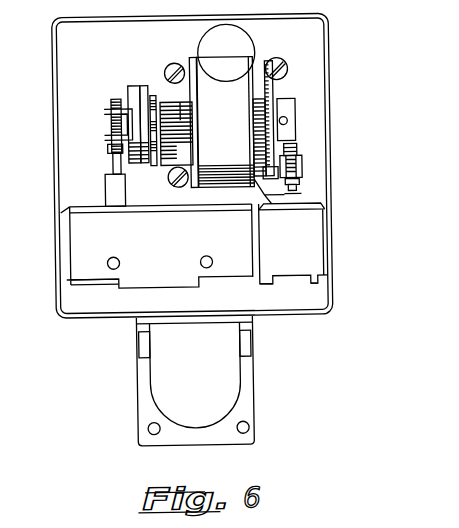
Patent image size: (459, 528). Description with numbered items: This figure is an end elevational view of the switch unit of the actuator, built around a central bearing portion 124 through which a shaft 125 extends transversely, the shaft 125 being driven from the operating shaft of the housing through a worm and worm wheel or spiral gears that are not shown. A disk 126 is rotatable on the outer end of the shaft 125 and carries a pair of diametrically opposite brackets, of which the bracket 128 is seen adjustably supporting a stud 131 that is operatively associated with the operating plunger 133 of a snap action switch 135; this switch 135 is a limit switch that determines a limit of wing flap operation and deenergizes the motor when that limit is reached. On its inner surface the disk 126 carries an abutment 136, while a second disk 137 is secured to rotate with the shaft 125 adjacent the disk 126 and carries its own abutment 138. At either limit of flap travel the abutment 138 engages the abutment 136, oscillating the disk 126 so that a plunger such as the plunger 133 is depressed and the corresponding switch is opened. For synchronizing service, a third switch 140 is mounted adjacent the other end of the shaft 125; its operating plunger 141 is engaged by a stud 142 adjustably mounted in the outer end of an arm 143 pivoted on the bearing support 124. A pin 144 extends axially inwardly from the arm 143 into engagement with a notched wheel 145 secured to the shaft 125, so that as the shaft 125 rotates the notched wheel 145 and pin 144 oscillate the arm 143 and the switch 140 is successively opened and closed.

The central bearing portion 124 is at (212, 186).
The shaft 125 is at (291, 111).
The disk 126 is at (138, 85).
The bracket 128 is at (105, 138).
The stud 131 is at (112, 100).
The operating plunger 133 is at (110, 170).
The snap action switch 135 is at (141, 272).
The abutment 136 is at (156, 105).
The second disk 137 is at (161, 185).
The abutment 138 is at (156, 152).
The third switch 140 is at (293, 272).
The operating plunger 141 is at (299, 192).
The stud 142 is at (297, 148).
The arm 143 is at (302, 165).
The pin 144 is at (276, 196).
The notched wheel 145 is at (285, 82).